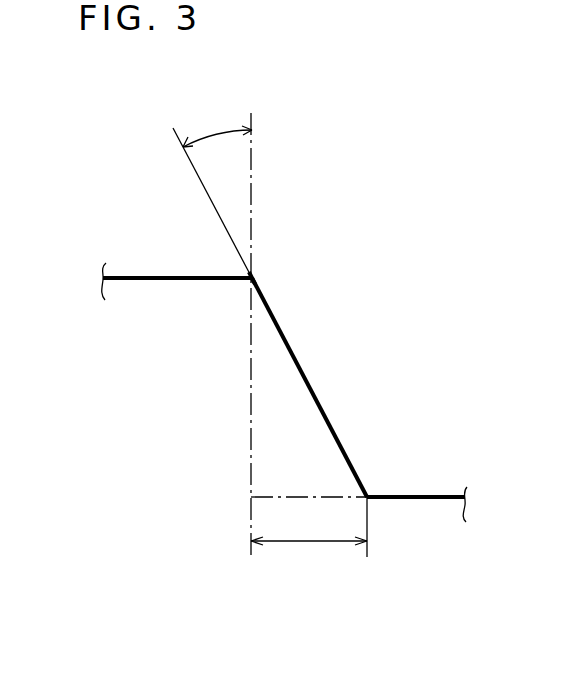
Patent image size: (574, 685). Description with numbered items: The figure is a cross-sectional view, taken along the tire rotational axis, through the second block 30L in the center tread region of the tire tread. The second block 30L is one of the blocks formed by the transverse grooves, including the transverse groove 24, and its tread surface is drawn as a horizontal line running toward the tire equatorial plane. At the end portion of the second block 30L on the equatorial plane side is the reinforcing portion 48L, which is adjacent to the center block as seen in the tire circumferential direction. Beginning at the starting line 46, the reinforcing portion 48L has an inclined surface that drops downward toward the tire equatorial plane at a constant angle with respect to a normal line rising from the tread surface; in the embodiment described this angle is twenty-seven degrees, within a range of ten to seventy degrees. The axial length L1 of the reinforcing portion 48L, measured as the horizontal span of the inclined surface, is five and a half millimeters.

The second block 30L is at (162, 277).
The reinforcing portion 48L is at (304, 373).
The transverse groove 24 is at (413, 497).
The starting line 46 is at (255, 270).
The length of reinforcing portion L1 is at (325, 540).